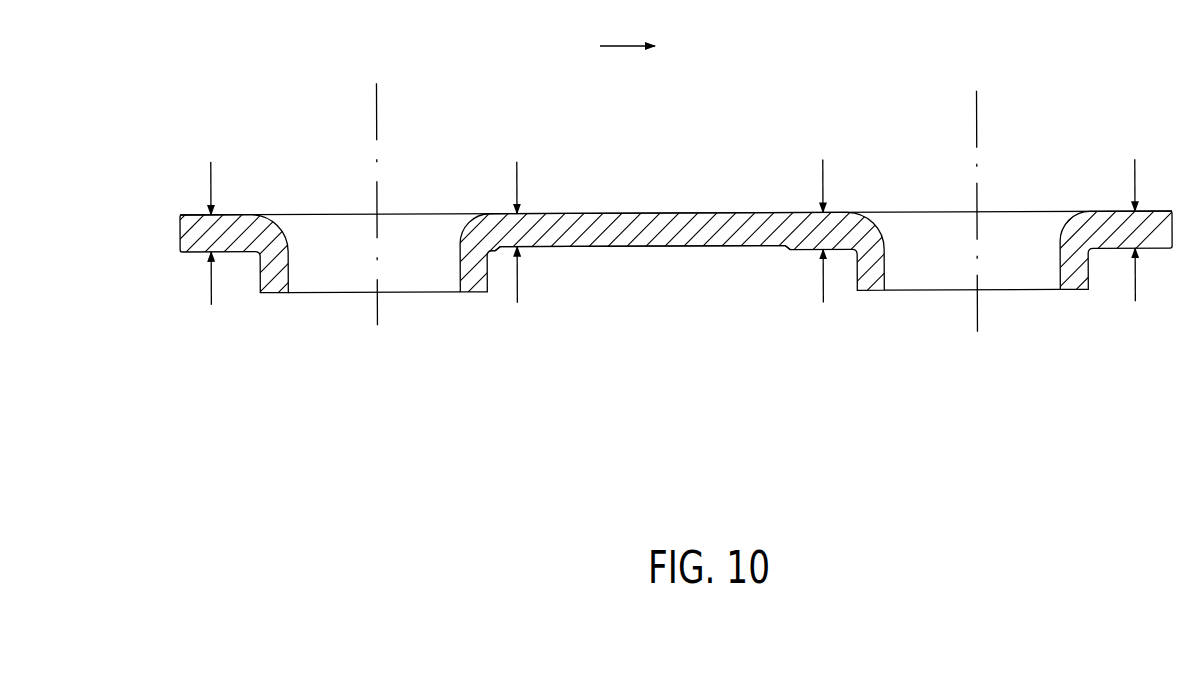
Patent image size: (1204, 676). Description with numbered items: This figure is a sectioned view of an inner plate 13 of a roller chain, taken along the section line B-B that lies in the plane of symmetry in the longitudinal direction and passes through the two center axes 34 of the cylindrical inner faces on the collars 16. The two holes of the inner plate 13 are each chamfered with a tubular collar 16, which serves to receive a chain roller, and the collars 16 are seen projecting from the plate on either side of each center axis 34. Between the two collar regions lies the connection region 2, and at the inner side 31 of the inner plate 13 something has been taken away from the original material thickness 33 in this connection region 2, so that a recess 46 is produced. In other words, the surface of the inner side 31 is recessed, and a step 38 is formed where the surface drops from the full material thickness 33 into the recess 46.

The connection region 2 is at (620, 175).
The inner plate 13 is at (270, 90).
The tubular collar 16 is at (273, 278).
The inner plate inner side 31 is at (618, 257).
The material thickness 33 is at (210, 182).
The center axis 34 is at (375, 115).
The step 38 is at (552, 250).
The recess 46 is at (678, 248).